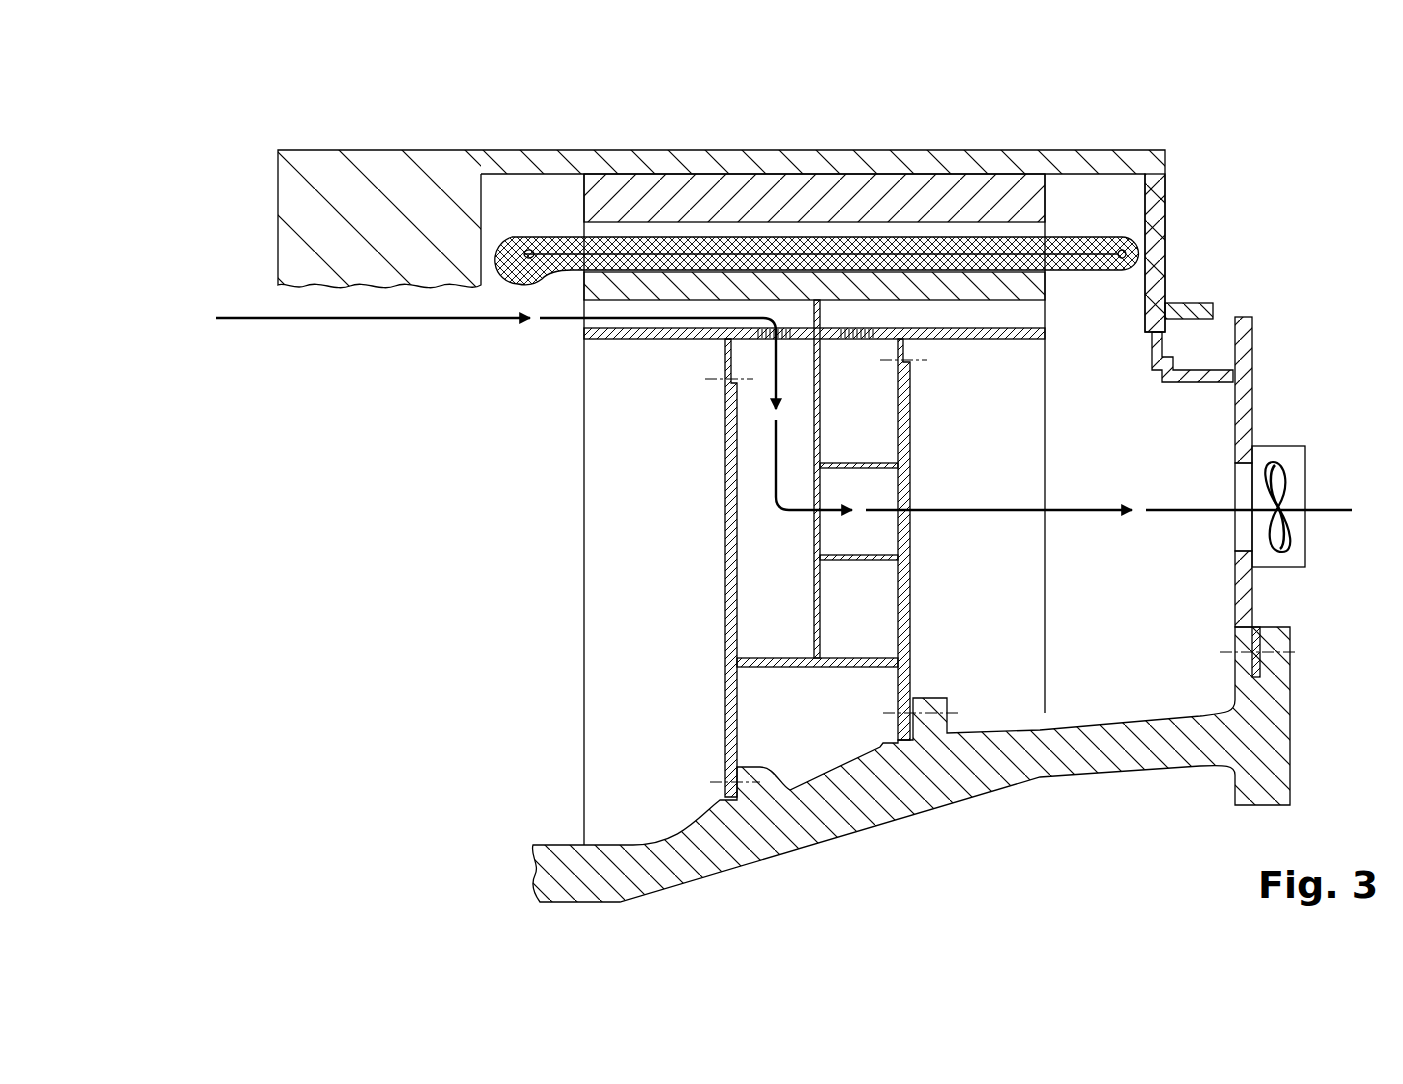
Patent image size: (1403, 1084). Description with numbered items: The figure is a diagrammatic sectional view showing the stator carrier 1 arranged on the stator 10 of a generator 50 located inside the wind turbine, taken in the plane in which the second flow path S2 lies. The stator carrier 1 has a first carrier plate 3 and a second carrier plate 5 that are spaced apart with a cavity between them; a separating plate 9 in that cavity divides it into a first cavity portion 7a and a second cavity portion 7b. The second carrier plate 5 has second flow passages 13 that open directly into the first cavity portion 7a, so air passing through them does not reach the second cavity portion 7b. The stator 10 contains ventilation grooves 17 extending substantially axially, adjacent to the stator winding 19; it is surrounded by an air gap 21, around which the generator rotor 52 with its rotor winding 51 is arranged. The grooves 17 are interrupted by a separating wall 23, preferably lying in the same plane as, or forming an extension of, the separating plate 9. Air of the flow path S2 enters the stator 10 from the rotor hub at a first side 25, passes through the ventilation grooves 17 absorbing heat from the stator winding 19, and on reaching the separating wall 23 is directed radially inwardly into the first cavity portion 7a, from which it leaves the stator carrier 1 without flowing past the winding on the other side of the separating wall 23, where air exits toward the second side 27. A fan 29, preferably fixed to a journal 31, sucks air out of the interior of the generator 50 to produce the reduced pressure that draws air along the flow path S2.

The stator carrier 1 is at (685, 459).
The first carrier plate 3 is at (731, 587).
The second carrier plate 5 is at (911, 587).
The first cavity portion 7a is at (770, 613).
The second cavity portion 7b is at (873, 614).
The separating plate 9 is at (822, 628).
The stator 10 is at (522, 215).
The second flow passages 13 is at (843, 463).
The ventilation grooves 17 is at (1038, 311).
The stator winding 19 is at (960, 247).
The air gap 21 is at (893, 226).
The separating wall 23 is at (810, 316).
The first side 25 is at (553, 597).
The second side 27 is at (1068, 592).
The fan 29 is at (1294, 423).
The journal 31 is at (1042, 762).
The generator 50 is at (1208, 192).
The rotor winding 51 is at (703, 196).
The generator rotor 52 is at (353, 162).
The second flow path S2 is at (375, 322).